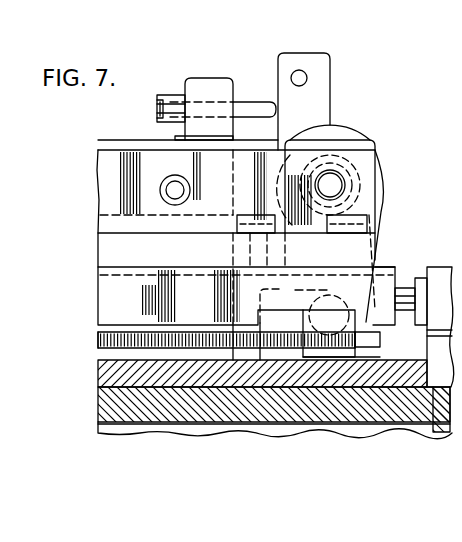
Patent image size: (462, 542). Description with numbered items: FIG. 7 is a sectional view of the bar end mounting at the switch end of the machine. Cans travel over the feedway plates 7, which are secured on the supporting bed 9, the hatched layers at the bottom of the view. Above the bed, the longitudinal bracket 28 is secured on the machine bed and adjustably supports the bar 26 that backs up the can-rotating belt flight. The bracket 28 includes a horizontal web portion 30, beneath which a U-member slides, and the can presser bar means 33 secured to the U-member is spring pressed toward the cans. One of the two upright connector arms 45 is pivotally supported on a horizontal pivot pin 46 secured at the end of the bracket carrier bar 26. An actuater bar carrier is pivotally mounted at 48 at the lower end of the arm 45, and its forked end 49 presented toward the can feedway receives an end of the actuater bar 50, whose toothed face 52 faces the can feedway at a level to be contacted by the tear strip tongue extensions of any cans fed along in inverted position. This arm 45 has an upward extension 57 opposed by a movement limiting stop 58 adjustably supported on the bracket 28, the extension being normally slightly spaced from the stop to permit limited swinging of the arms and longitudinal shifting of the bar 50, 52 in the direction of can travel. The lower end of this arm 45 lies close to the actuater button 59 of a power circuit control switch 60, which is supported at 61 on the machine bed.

The feedway plates 7 is at (118, 373).
The supporting bed 9 is at (120, 402).
The bar 26 is at (110, 217).
The longitudinal bracket 28 is at (104, 142).
The horizontal web portion 30 is at (117, 252).
The can presser bar means 33 is at (110, 288).
The upright connector arms 45 is at (377, 168).
The horizontal pivot pins 46 is at (342, 183).
The pivotal mounting 48 is at (370, 322).
The forked end 49 is at (306, 385).
The actuater bar 50 is at (121, 352).
The toothed face 52 is at (125, 333).
The upward extension 57 is at (288, 57).
The movement limiting stop 58 is at (243, 105).
The actuater button 59 is at (410, 298).
The power circuit control switch 60 is at (441, 272).
The switch support 61 is at (433, 424).